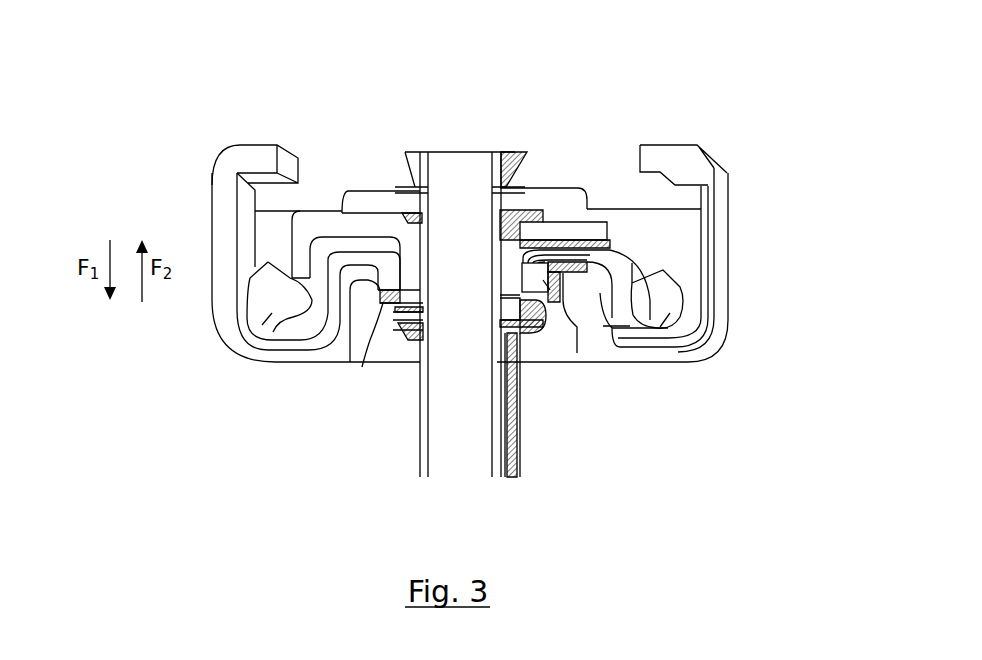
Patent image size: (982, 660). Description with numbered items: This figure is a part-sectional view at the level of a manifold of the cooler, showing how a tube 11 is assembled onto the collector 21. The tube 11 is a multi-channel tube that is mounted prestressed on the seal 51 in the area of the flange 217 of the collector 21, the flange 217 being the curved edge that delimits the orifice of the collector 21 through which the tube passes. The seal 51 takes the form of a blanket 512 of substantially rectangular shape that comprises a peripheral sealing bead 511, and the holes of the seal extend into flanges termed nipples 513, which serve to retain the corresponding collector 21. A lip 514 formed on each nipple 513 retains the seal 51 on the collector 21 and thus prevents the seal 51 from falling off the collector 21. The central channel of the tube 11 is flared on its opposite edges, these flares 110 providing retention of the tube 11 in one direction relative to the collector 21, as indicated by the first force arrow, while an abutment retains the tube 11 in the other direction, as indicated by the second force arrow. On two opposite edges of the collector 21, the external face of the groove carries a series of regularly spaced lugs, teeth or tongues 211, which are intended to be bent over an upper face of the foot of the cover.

The tube 11 is at (416, 458).
The flare 110 is at (527, 160).
The collector 21 is at (730, 221).
The lugs, teeth or tongues 211 is at (267, 157).
The flange 217 is at (563, 302).
The seal 51 is at (672, 298).
The peripheral sealing bead 511 is at (273, 312).
The blanket 512 is at (376, 223).
The nipple 513 is at (362, 367).
The lip 514 is at (533, 333).